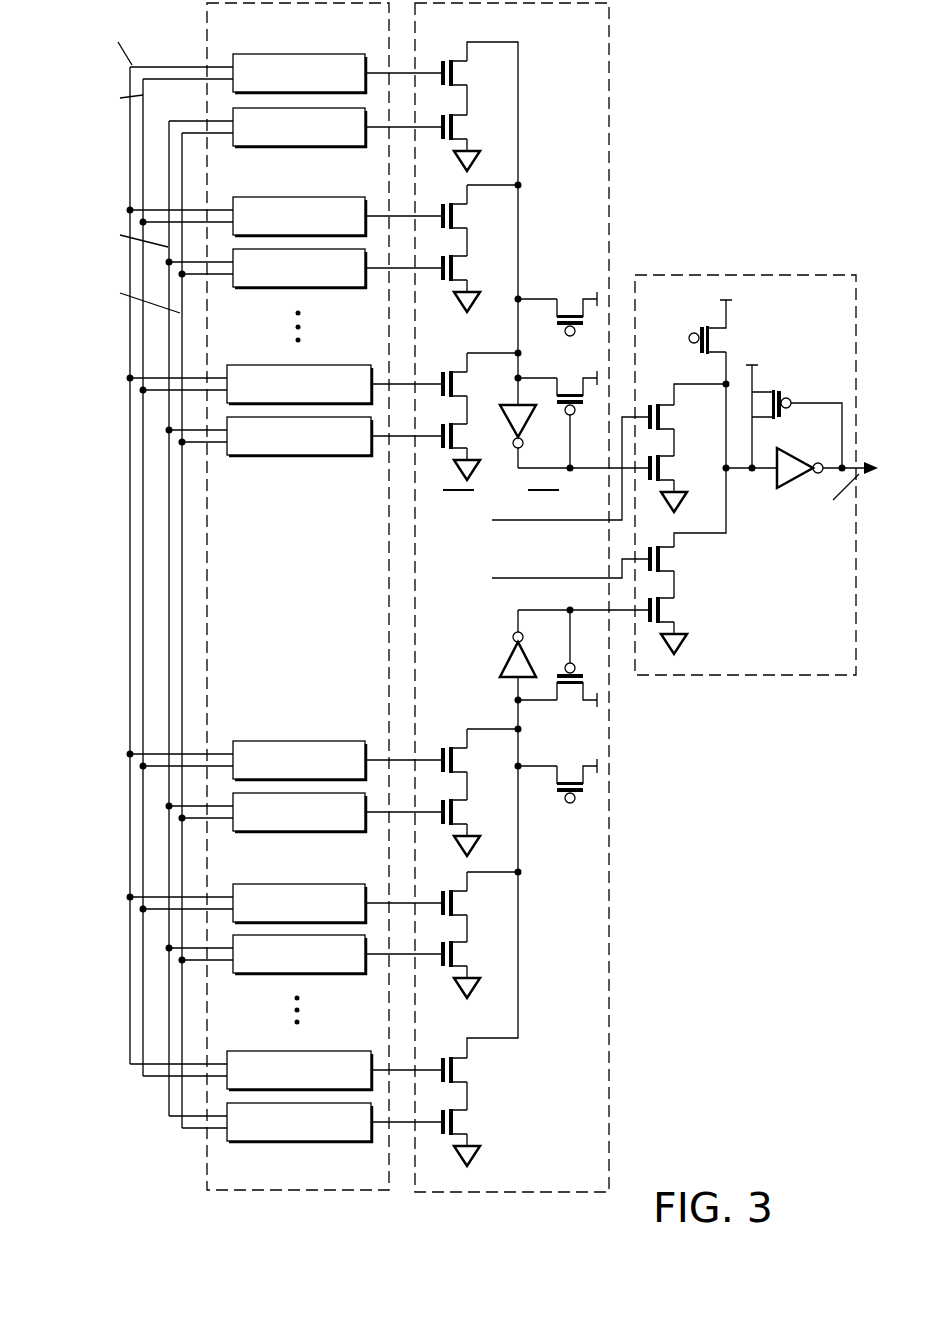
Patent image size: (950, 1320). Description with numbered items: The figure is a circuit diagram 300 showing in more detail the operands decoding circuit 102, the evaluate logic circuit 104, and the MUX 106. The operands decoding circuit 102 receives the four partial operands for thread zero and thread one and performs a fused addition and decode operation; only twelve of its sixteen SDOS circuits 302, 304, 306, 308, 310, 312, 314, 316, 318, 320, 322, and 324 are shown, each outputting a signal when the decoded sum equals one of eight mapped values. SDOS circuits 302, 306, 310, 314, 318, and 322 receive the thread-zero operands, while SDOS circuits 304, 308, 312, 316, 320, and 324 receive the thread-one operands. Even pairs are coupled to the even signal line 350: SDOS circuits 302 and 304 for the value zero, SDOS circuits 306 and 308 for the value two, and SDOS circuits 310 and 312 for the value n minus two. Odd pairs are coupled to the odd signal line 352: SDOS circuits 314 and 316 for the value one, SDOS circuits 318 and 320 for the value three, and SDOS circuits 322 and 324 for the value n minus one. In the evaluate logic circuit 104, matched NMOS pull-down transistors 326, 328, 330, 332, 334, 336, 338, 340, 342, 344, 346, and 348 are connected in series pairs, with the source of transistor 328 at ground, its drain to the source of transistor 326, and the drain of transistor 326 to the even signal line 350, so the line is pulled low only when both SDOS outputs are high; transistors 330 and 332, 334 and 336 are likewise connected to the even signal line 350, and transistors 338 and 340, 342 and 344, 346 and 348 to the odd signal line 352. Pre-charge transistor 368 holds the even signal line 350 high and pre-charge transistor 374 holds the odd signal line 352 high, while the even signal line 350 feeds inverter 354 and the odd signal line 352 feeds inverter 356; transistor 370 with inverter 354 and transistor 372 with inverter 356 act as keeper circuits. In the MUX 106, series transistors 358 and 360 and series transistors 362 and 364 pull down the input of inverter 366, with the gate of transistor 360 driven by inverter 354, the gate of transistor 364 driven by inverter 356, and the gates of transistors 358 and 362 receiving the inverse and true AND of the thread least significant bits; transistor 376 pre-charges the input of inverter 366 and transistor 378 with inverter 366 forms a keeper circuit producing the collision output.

The circuit diagram 300 is at (461, 597).
The operands decoding circuit 102 is at (216, 596).
The evaluate logic circuit 104 is at (609, 937).
The MUX 106 is at (792, 275).
The SDOS circuit 302 is at (337, 54).
The SDOS circuit 304 is at (258, 146).
The SDOS circuit 306 is at (337, 197).
The SDOS circuit 308 is at (258, 287).
The SDOS circuit 310 is at (337, 365).
The SDOS circuit 312 is at (258, 455).
The SDOS circuit 314 is at (337, 741).
The SDOS circuit 316 is at (258, 831).
The SDOS circuit 318 is at (337, 884).
The SDOS circuit 320 is at (258, 973).
The SDOS circuit 322 is at (337, 1051).
The SDOS circuit 324 is at (258, 1141).
The NMOS pull-down transistor 326 is at (456, 73).
The NMOS pull-down transistor 328 is at (456, 127).
The NMOS pull-down transistor 330 is at (456, 216).
The NMOS pull-down transistor 332 is at (456, 268).
The NMOS pull-down transistor 334 is at (456, 384).
The NMOS pull-down transistor 336 is at (456, 436).
The NMOS pull-down transistor 338 is at (456, 760).
The NMOS pull-down transistor 340 is at (456, 812).
The NMOS pull-down transistor 342 is at (456, 903).
The NMOS pull-down transistor 344 is at (456, 954).
The NMOS pull-down transistor 346 is at (456, 1070).
The NMOS pull-down transistor 348 is at (456, 1122).
The even signal line 350 is at (510, 261).
The odd signal line 352 is at (517, 932).
The inverter 354 is at (533, 423).
The inverter 356 is at (504, 658).
The NMOS pull-down transistor 358 is at (663, 417).
The NMOS pull-down transistor 360 is at (663, 468).
The NMOS pull-down transistor 362 is at (663, 559).
The NMOS pull-down transistor 364 is at (663, 610).
The inverter 366 is at (790, 451).
The PMOS transistor 368 is at (570, 312).
The PMOS transistor 370 is at (570, 390).
The PMOS transistor 372 is at (570, 690).
The PMOS transistor 374 is at (570, 778).
The PMOS transistor 376 is at (712, 338).
The PMOS transistor 378 is at (773, 387).